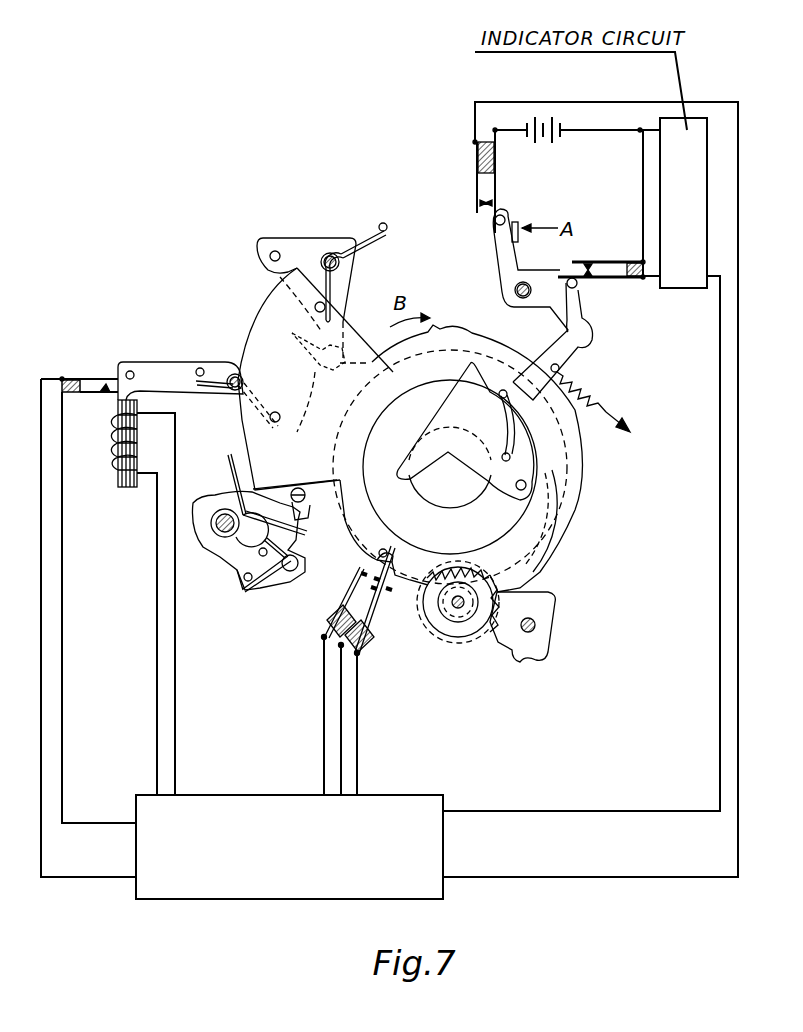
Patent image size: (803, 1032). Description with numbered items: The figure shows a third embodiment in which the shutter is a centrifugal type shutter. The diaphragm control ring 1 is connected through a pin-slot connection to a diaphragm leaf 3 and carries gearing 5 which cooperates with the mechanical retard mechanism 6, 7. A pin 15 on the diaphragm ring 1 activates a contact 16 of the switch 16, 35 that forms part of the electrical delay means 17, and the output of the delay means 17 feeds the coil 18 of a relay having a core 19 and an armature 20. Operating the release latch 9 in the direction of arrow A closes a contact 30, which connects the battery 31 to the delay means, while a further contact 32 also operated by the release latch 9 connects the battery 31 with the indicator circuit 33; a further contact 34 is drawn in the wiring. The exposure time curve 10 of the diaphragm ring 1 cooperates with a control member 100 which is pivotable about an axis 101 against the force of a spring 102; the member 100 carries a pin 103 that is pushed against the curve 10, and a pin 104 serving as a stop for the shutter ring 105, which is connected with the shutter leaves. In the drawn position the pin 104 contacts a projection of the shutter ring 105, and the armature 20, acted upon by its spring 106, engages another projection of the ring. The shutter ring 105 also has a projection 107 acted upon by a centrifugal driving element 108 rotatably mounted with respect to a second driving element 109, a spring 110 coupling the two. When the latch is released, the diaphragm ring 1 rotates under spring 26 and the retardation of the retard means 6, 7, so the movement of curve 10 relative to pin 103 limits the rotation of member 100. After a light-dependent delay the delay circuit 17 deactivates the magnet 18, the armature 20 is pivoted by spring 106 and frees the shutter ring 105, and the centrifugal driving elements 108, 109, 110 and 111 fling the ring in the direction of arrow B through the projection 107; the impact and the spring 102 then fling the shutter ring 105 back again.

The diaphragm control ring 1 is at (530, 518).
The diaphragm leaf 3 is at (493, 475).
The gearing 5 is at (533, 545).
The retard mechanism 6 is at (458, 637).
The retard mechanism 7 is at (533, 655).
The release latch 9 is at (500, 281).
The exposure time curve 10 is at (252, 324).
The pin 15 is at (380, 550).
The contact 16 is at (383, 598).
The electrical delay means 17 is at (290, 807).
The coil 18 is at (114, 456).
The core 19 is at (128, 488).
The armature 20 is at (160, 362).
The spring 26 is at (596, 397).
The contact 30 is at (485, 213).
The battery 31 is at (540, 115).
The contact 32 is at (592, 272).
The indicator circuit 33 is at (680, 278).
The contact 34 is at (95, 379).
The switch 35 is at (348, 590).
The control member 100 is at (310, 250).
The axis 101 is at (341, 264).
The spring 102 is at (360, 245).
The pin 103 is at (272, 251).
The pin 104 is at (302, 342).
The shutter ring 105 is at (570, 507).
The spring 106 is at (216, 371).
The projection 107 is at (298, 488).
The centrifugal driving element 108 is at (242, 588).
The second driving element 109 is at (205, 502).
The spring 110 is at (280, 587).
The centrifugal driving element 111 is at (226, 456).